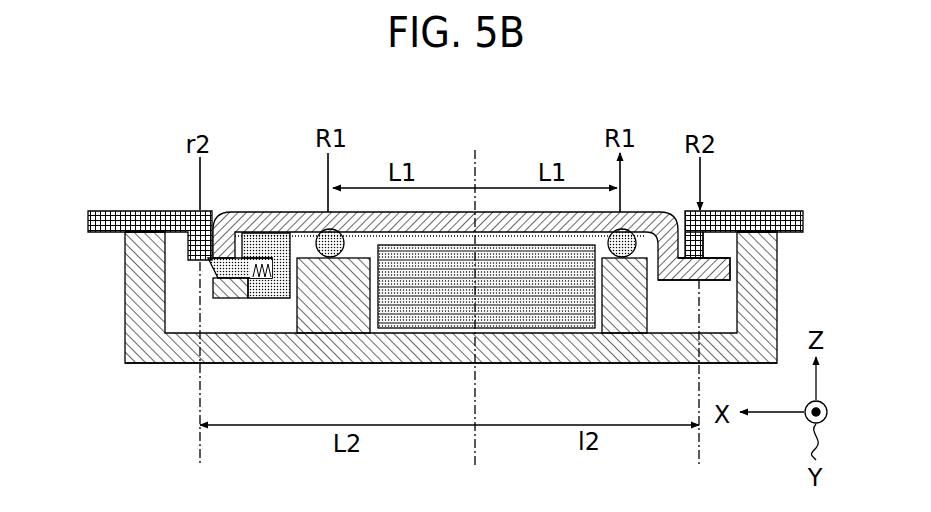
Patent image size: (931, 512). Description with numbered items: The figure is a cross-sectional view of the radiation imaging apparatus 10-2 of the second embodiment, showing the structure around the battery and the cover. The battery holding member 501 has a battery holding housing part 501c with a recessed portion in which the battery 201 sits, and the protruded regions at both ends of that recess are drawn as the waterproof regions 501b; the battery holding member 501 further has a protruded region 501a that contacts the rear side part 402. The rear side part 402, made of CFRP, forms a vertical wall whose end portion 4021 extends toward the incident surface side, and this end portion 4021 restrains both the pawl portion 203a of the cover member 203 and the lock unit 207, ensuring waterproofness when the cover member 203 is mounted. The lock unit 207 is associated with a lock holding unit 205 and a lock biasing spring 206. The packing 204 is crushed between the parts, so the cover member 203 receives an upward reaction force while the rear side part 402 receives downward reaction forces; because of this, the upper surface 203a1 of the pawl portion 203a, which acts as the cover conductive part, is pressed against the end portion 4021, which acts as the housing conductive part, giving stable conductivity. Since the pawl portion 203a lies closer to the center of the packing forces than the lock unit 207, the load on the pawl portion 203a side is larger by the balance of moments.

The radiation imaging apparatus 10-2 is at (477, 149).
The battery 201 is at (565, 312).
The cover member 203 is at (290, 215).
The pawl portion 203a is at (718, 274).
The upper surface 203a1 is at (713, 253).
The packing 204 is at (316, 230).
The lock holding unit 205 is at (266, 280).
The lock biasing spring 206 is at (262, 295).
The lock unit 207 is at (200, 265).
The rear side part 402 is at (153, 215).
The end portion 4021 is at (695, 250).
The battery holding member 501 is at (183, 350).
The protruded region 501a is at (142, 247).
The waterproof regions 501b is at (330, 262).
The battery holding housing part 501c is at (431, 366).